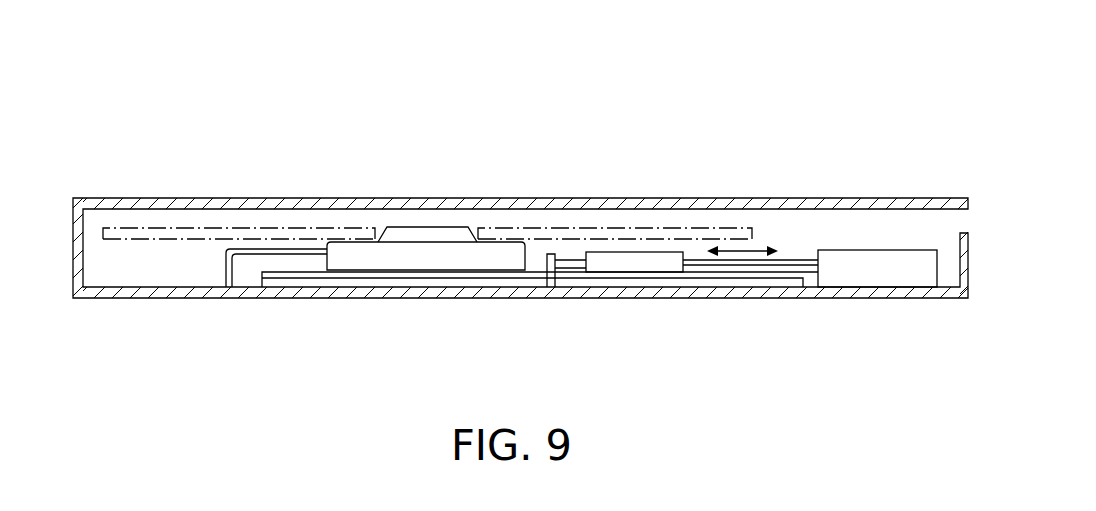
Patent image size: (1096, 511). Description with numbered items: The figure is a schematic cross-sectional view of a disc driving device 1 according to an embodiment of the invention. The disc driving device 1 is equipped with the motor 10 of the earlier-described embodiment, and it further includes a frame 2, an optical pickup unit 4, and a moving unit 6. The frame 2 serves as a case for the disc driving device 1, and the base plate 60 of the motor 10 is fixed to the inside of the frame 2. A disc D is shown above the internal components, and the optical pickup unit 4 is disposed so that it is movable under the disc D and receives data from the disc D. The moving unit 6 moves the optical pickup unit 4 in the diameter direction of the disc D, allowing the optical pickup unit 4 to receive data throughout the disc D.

The disc driving device 1 is at (511, 54).
The frame 2 is at (137, 287).
The disc D is at (607, 233).
The motor 10 is at (489, 225).
The base plate 60 is at (373, 275).
The optical pickup unit 4 is at (632, 263).
The moving unit 6 is at (760, 263).